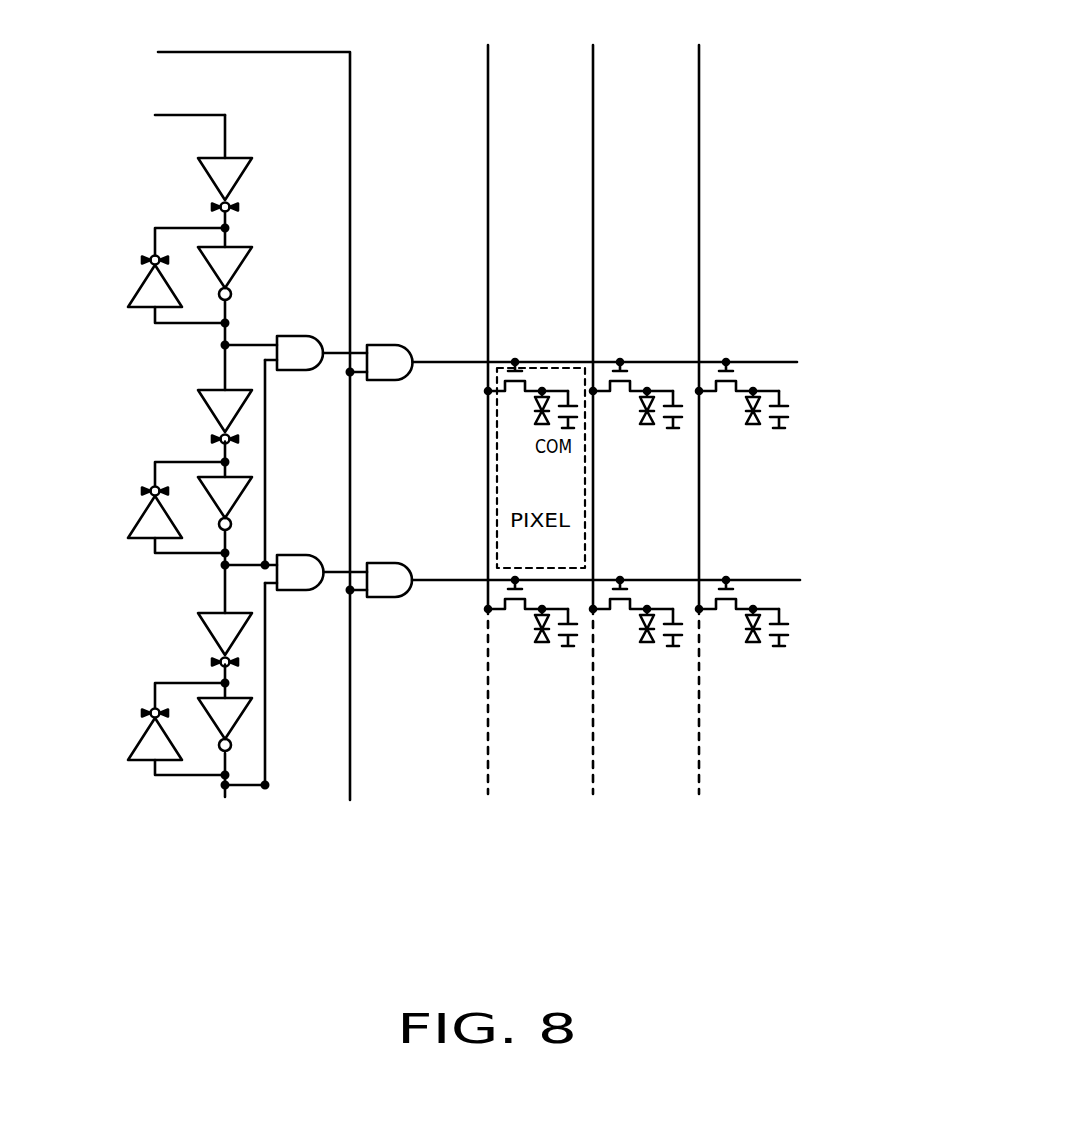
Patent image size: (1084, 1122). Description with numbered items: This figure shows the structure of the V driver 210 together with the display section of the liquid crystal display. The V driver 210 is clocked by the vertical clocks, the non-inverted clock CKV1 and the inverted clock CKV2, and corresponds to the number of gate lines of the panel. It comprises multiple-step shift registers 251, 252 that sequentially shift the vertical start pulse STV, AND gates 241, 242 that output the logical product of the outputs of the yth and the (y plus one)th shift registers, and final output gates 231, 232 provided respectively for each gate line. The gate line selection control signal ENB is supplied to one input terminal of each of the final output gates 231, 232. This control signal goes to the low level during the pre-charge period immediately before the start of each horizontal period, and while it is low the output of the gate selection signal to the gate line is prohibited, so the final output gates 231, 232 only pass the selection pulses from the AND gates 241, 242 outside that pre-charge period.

The V driver 210 is at (295, 832).
The final output gate 231 is at (573, 346).
The final output gate 232 is at (575, 563).
The AND gate 241 is at (296, 333).
The AND gate 242 is at (296, 555).
The shift register 251 is at (150, 275).
The shift register 252 is at (150, 507).